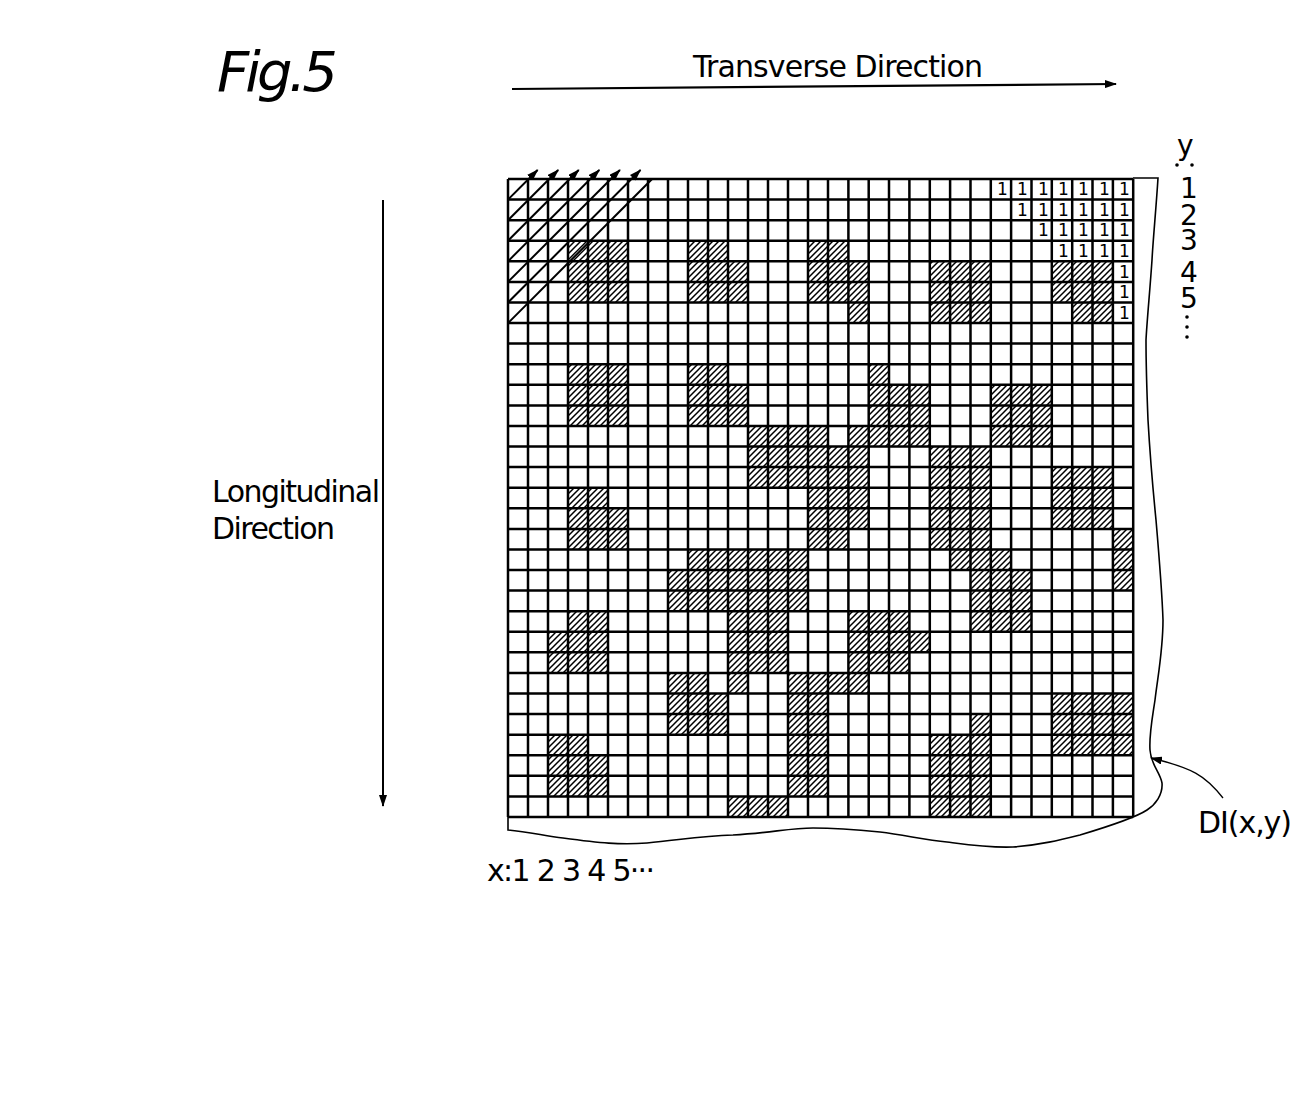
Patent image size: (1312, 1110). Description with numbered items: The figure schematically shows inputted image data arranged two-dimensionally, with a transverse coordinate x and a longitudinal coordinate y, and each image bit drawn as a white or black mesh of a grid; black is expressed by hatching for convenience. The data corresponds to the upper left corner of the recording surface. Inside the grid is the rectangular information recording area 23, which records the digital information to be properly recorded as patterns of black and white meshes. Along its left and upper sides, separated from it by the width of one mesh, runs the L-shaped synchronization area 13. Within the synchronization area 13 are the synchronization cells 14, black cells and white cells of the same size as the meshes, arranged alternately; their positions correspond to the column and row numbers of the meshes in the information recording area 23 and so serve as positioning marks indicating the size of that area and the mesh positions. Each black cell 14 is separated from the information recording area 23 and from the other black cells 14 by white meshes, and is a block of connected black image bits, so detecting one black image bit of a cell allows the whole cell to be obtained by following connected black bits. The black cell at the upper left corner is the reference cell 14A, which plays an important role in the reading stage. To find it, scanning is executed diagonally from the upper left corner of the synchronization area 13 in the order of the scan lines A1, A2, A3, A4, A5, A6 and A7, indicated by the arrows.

The reference cell 14A is at (650, 242).
The synchronization cells 14 is at (628, 242).
The synchronization area 13 is at (965, 258).
The information recording area 23 is at (887, 363).
The scan line A1 is at (508, 203).
The scan line A2 is at (508, 224).
The scan line A3 is at (508, 243).
The scan line A4 is at (508, 262).
The scan line A5 is at (508, 282).
The scan line A6 is at (508, 302).
The scan line A7 is at (508, 323).